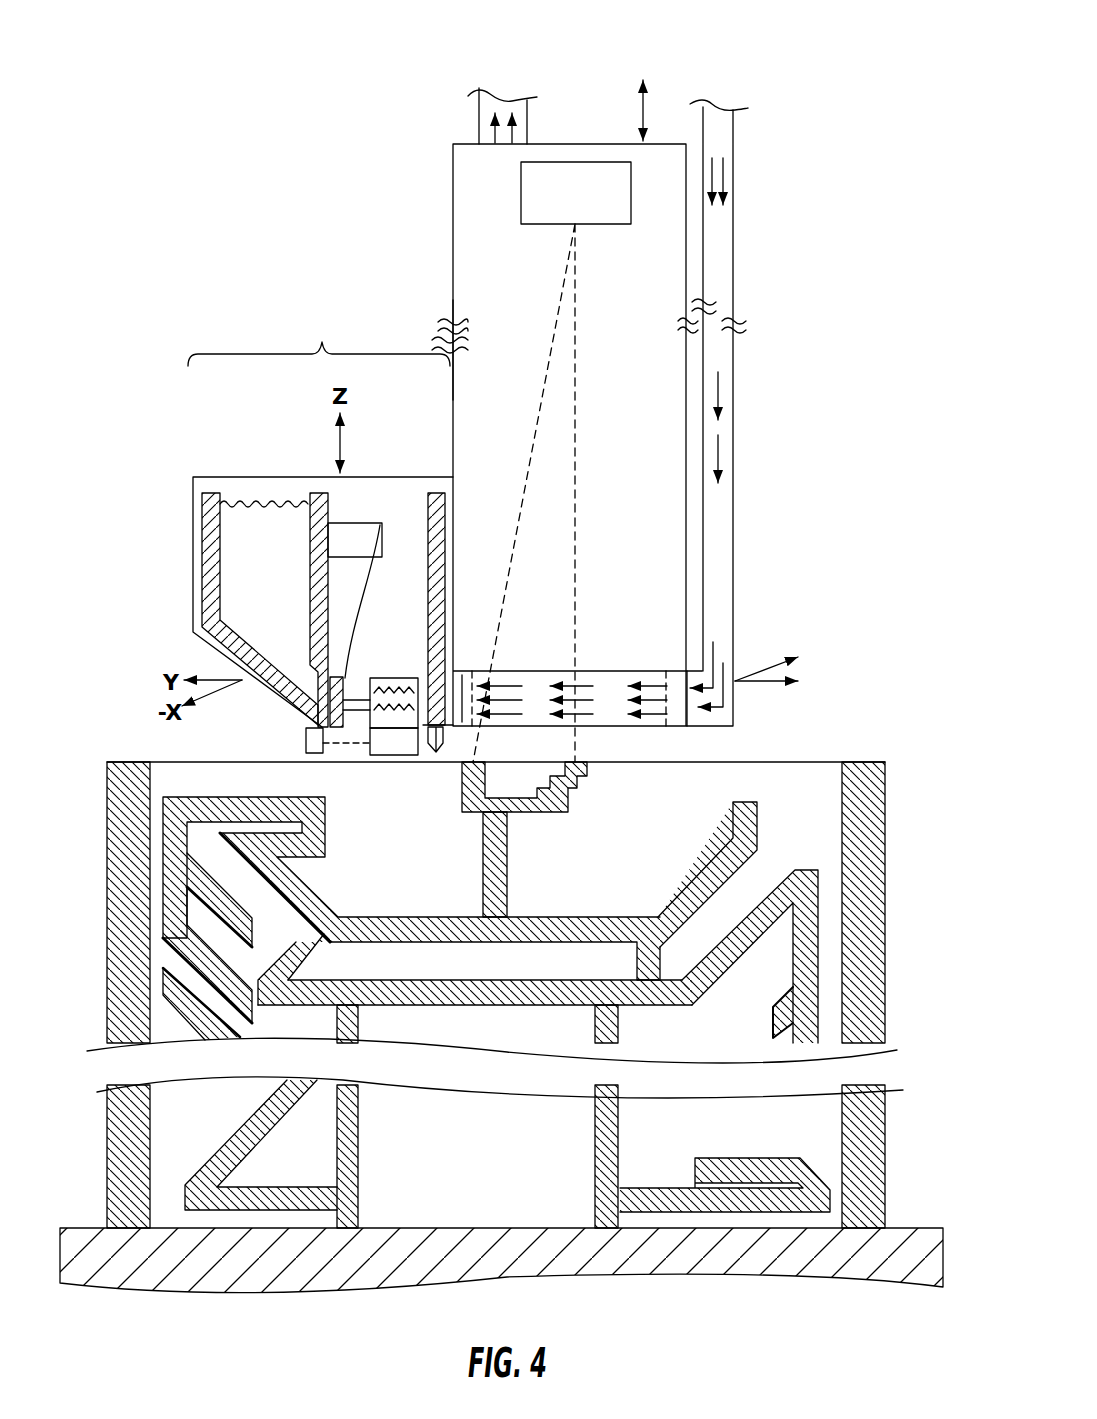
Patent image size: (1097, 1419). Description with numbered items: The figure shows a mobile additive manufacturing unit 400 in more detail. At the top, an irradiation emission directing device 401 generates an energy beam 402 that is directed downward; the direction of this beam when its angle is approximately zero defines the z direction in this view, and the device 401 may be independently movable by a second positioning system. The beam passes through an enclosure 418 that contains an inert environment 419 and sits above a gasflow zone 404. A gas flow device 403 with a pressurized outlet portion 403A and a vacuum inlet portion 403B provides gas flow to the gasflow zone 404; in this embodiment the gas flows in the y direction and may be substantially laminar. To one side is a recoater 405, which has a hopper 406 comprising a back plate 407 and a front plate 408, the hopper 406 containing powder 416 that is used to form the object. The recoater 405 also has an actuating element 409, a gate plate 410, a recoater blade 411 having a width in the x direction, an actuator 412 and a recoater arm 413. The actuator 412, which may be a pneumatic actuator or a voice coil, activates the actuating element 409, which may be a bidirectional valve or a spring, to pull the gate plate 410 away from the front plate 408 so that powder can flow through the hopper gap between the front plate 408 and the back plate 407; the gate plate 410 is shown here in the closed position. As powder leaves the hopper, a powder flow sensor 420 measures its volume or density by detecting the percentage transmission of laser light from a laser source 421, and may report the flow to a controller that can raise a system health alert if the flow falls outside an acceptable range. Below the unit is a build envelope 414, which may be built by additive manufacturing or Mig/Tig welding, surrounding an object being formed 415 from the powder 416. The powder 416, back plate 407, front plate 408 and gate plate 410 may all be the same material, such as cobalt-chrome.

The mobile additive manufacturing unit 400 is at (800, 79).
The irradiation emission directing device 401 is at (572, 162).
The energy beam 402 is at (582, 372).
The gas flow device 403 is at (657, 727).
The pressurized outlet portion 403A is at (677, 675).
The vacuum inlet portion 403B is at (463, 686).
The gasflow zone 404 is at (612, 687).
The recoater 405 is at (319, 339).
The hopper 406 is at (202, 476).
The back plate 407 is at (198, 548).
The front plate 408 is at (328, 517).
The actuating element 409 is at (353, 617).
The gate plate 410 is at (337, 727).
The recoater blade 411 is at (432, 735).
The actuator 412 is at (405, 679).
The recoater arm 413 is at (435, 497).
The build envelope 414 is at (885, 933).
The object being formed 415 is at (757, 825).
The powder 416 is at (235, 500).
The enclosure 418 is at (452, 232).
The inert environment 419 is at (463, 353).
The powder flow sensor 420 is at (192, 513).
The laser source 421 is at (383, 755).